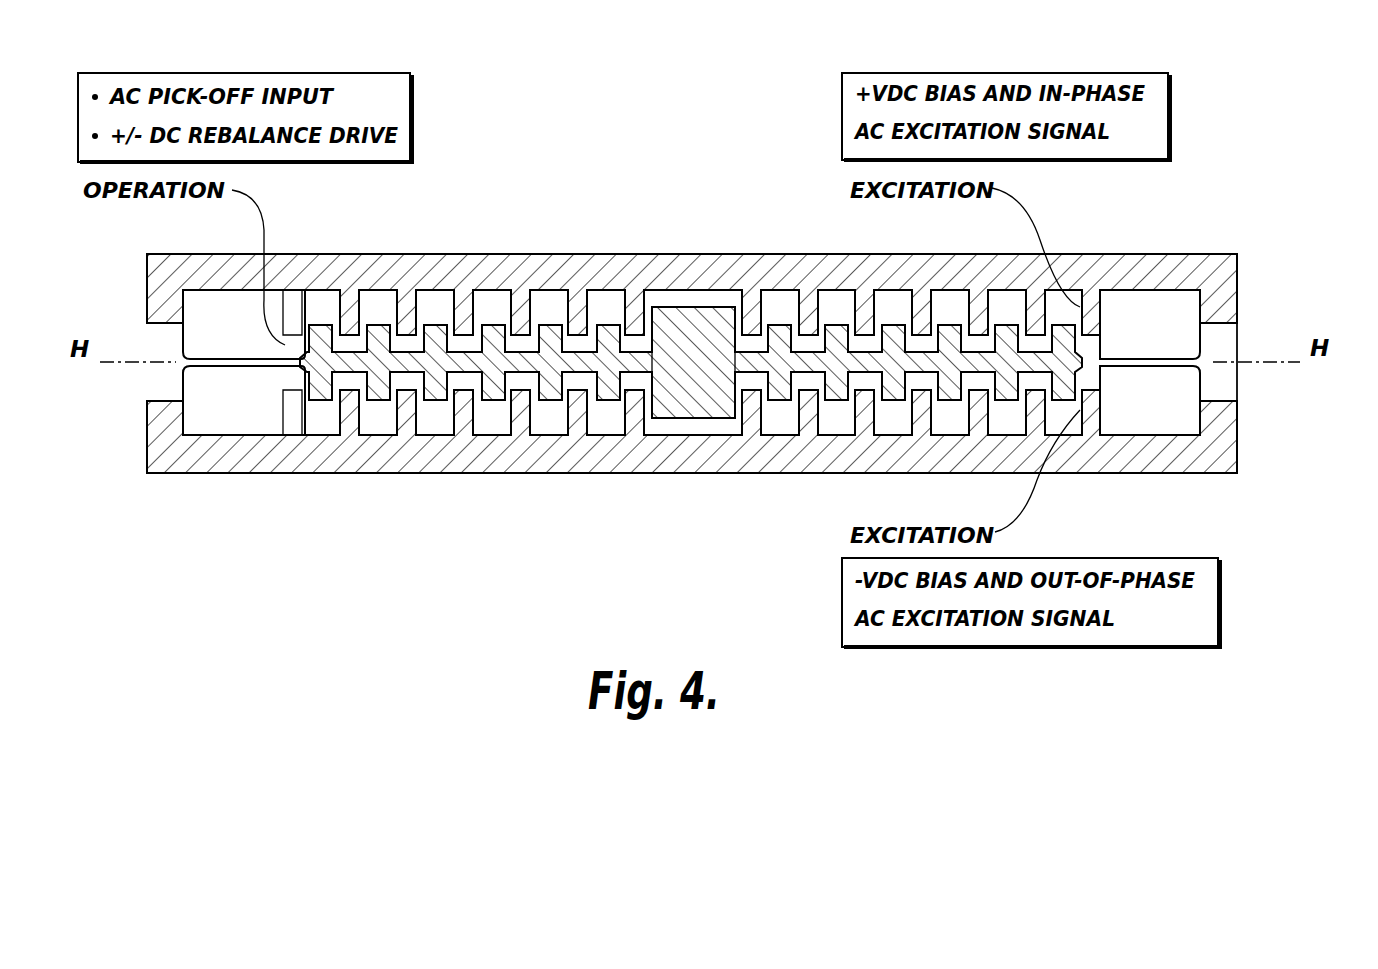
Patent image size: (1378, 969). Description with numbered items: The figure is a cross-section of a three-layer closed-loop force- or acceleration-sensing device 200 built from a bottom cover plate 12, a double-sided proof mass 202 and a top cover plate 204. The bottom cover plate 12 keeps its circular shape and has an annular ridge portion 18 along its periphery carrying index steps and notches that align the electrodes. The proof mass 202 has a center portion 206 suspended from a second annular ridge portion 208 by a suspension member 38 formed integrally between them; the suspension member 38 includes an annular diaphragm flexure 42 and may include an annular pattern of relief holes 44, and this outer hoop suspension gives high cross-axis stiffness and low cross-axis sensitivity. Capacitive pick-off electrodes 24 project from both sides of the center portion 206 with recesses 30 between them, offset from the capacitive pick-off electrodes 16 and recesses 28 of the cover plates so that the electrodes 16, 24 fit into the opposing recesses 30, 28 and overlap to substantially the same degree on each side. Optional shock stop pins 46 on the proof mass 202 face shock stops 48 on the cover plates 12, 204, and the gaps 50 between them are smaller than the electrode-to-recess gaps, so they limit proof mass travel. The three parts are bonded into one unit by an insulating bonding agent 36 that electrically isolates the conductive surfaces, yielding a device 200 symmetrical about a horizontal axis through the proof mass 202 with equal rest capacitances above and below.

The force- or acceleration-sensing device 200 is at (1103, 62).
The bottom cover plate 12 is at (632, 463).
The top cover plate 204 is at (630, 291).
The annular ridge portion 18 is at (147, 293).
The second annular ridge portion 208 is at (147, 384).
The insulating bonding agent 36 is at (1243, 320).
The proof mass 202 is at (1249, 374).
The annular diaphragm flexure 42 is at (1193, 357).
The suspension member 38 is at (1147, 373).
The relief holes 44 is at (1143, 357).
The capacitive pick-off electrodes 24 is at (318, 333).
The center portion 206 is at (548, 374).
The shock stop pins 46 is at (676, 308).
The shock stops 48 is at (700, 292).
The gaps 50 is at (744, 335).
The capacitive pick-off electrodes 16 is at (432, 318).
The recesses 28 is at (408, 332).
The recesses 30 is at (352, 343).